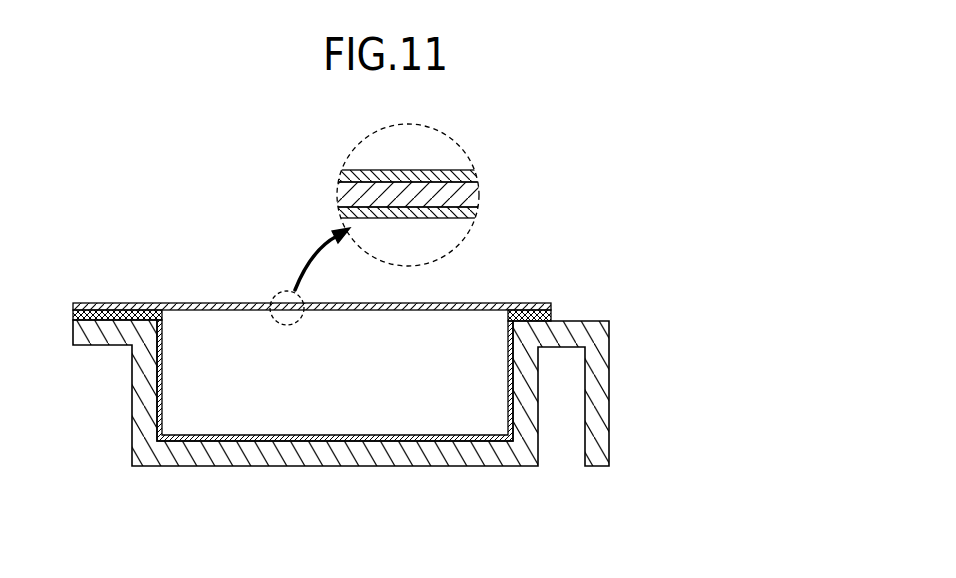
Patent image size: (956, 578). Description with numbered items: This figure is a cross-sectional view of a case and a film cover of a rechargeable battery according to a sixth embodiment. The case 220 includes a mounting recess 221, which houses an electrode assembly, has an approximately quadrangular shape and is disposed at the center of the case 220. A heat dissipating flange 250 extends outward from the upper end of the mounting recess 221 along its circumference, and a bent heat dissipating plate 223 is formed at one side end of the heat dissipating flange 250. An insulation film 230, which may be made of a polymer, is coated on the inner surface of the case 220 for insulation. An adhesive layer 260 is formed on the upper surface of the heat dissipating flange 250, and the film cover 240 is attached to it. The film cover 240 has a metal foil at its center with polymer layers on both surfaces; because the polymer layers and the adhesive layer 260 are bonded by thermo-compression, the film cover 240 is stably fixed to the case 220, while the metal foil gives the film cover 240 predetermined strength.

The case 220 is at (617, 363).
The mounting recess 221 is at (395, 450).
The heat dissipating plate 223 is at (599, 417).
The insulation film 230 is at (272, 437).
The film cover 240 is at (214, 303).
The heat dissipating flange 250 is at (105, 333).
The adhesive layer 260 is at (105, 303).